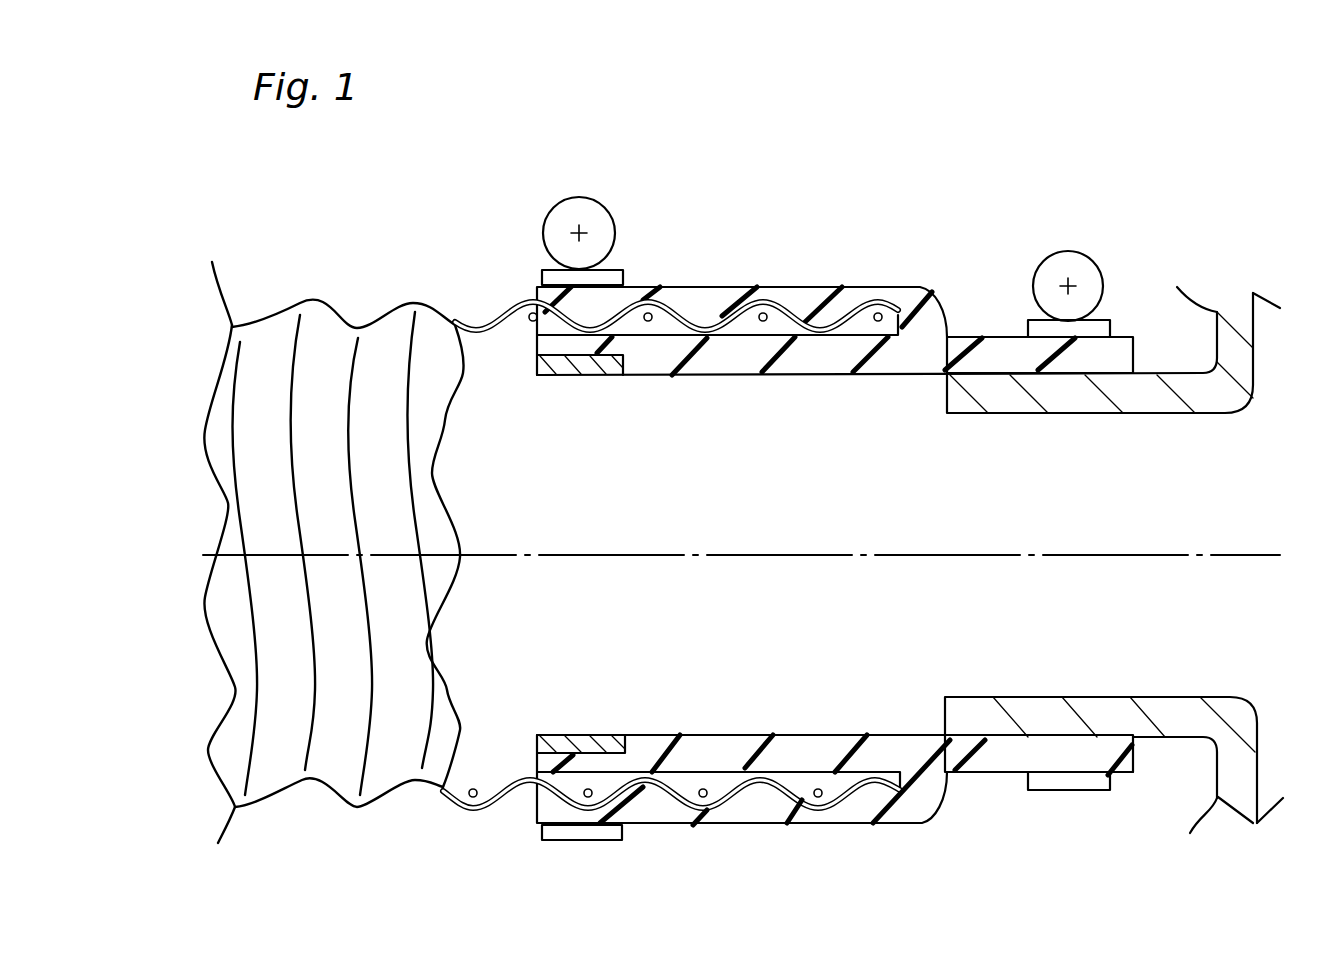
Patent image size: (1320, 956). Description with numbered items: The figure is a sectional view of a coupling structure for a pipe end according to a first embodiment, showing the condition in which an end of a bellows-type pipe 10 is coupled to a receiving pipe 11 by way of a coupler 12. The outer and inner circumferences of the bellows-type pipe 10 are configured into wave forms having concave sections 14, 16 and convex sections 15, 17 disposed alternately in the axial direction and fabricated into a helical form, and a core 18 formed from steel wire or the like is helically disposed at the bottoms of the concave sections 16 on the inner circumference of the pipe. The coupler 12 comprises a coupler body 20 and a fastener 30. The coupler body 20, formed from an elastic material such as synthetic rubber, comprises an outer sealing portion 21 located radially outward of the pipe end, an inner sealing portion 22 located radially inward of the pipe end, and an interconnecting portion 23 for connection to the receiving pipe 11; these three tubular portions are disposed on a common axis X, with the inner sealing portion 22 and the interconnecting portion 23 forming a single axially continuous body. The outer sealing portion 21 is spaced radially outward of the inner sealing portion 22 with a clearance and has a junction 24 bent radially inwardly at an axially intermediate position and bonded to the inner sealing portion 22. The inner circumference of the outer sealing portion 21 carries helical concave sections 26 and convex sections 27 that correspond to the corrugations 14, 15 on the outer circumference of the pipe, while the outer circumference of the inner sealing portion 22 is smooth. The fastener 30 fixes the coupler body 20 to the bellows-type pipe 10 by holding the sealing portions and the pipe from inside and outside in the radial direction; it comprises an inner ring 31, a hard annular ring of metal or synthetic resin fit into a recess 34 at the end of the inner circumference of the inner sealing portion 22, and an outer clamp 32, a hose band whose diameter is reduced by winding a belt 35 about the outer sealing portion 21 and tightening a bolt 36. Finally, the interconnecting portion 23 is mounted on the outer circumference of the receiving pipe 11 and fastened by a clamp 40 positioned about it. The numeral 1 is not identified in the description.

The terminal fitting 1 is at (555, 330).
The bellows-type pipe 10 is at (372, 300).
The receiving pipe 11 is at (1168, 745).
The coupler 12 is at (922, 196).
The concave sections 14 is at (714, 305).
The convex sections 15 is at (655, 297).
The concave sections 16 is at (651, 322).
The convex sections 17 is at (712, 335).
The core 18 is at (765, 322).
The coupler body 20 is at (912, 287).
The outer sealing portion 21 is at (823, 287).
The inner sealing portion 22 is at (838, 377).
The interconnecting portion 23 is at (1125, 348).
The junction 24 is at (937, 313).
The concave sections 26 is at (720, 793).
The convex sections 27 is at (772, 790).
The fastener 30 is at (578, 180).
The inner ring 31 is at (548, 378).
The outer clamp 32 is at (548, 848).
The recess 34 is at (600, 742).
The belt 35 is at (590, 842).
The bolt 36 is at (558, 213).
The clamp 40 is at (1078, 245).
The common axis X is at (1270, 548).